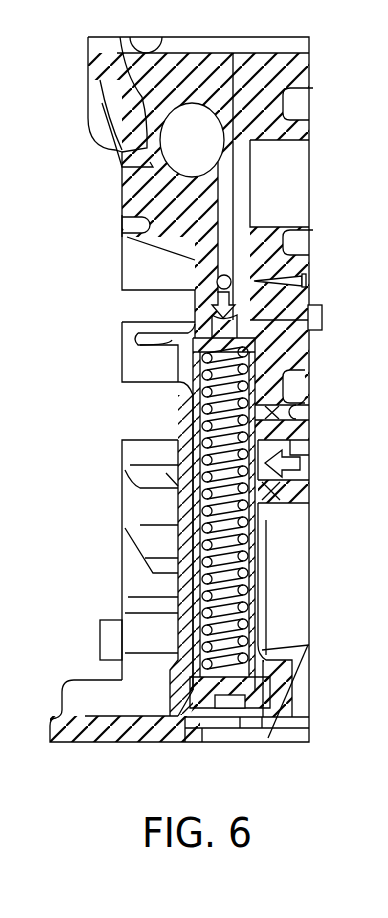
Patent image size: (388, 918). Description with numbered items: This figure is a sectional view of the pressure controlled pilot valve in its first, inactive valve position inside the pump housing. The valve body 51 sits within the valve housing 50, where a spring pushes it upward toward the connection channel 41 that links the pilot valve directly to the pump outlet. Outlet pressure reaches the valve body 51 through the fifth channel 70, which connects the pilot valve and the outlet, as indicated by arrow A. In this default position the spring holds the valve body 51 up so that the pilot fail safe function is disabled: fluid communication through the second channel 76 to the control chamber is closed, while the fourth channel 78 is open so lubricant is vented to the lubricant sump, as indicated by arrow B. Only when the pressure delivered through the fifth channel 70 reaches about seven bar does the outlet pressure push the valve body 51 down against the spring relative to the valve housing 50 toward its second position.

The connection channel 41 is at (210, 133).
The fifth channel 70 is at (222, 207).
The valve body 51 is at (192, 390).
The valve housing 50 is at (178, 587).
The second channel 76 is at (292, 410).
The fourth channel 78 is at (307, 480).
The arrow A is at (223, 302).
The arrow B is at (300, 467).